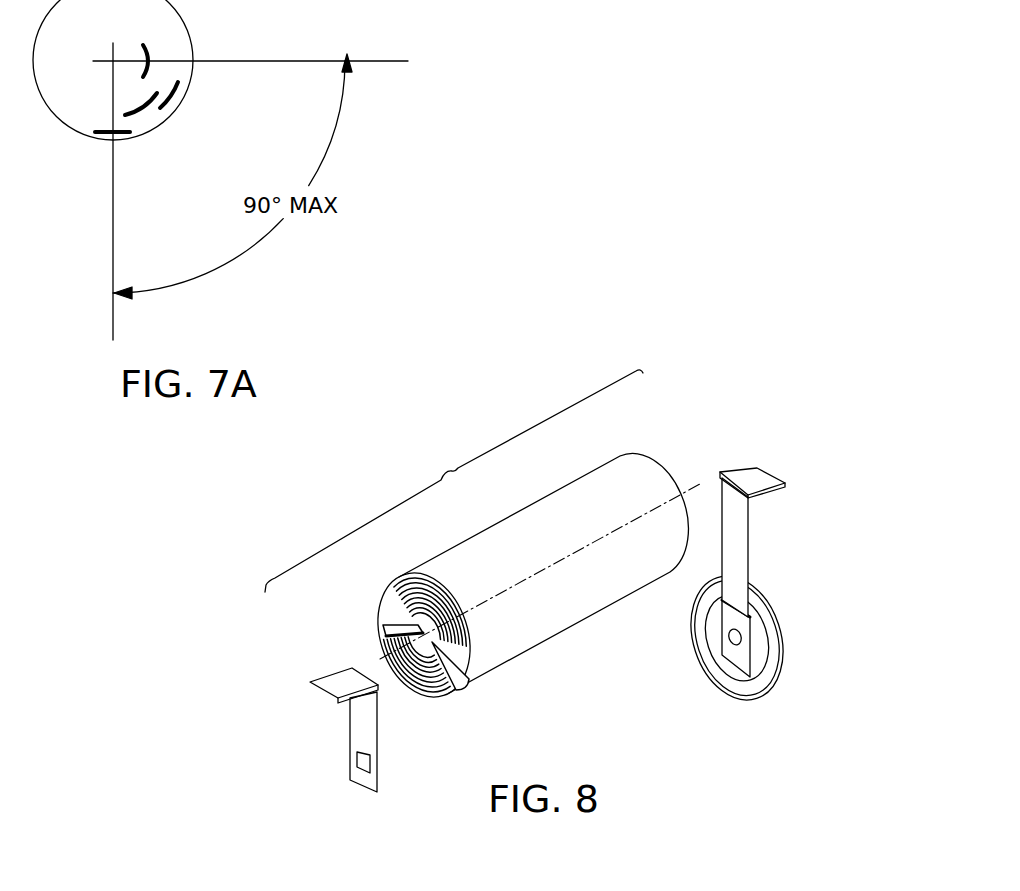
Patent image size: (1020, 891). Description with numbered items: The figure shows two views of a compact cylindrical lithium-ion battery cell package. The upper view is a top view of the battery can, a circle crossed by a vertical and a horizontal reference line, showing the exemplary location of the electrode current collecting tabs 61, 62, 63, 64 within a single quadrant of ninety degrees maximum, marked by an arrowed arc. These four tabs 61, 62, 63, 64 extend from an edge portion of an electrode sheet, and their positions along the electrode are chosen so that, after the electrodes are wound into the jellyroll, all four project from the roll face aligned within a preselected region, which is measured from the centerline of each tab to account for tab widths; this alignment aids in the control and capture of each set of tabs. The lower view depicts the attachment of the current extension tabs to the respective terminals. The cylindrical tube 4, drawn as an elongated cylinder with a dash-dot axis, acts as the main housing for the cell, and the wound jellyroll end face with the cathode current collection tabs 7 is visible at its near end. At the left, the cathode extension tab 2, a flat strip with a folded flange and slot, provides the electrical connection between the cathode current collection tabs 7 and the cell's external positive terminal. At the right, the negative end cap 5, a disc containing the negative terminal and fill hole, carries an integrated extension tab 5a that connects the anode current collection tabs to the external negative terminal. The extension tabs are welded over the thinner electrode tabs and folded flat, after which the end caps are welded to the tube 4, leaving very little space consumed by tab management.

In FIG. 7A, the current collecting tab 61 is at (107, 138).
In FIG. 7A, the current collecting tab 62 is at (178, 88).
In FIG. 7A, the current collecting tab 63 is at (140, 107).
In FIG. 7A, the current collecting tab 64 is at (147, 53).
In FIG. 8, the cathode extension tab 2 is at (328, 677).
In FIG. 8, the cylindrical tube 4 is at (483, 530).
In FIG. 8, the negative end cap 5 is at (767, 600).
In FIG. 8, the integrated extension tab 5a is at (757, 468).
In FIG. 8, the cathode current collection tabs 7 is at (437, 688).